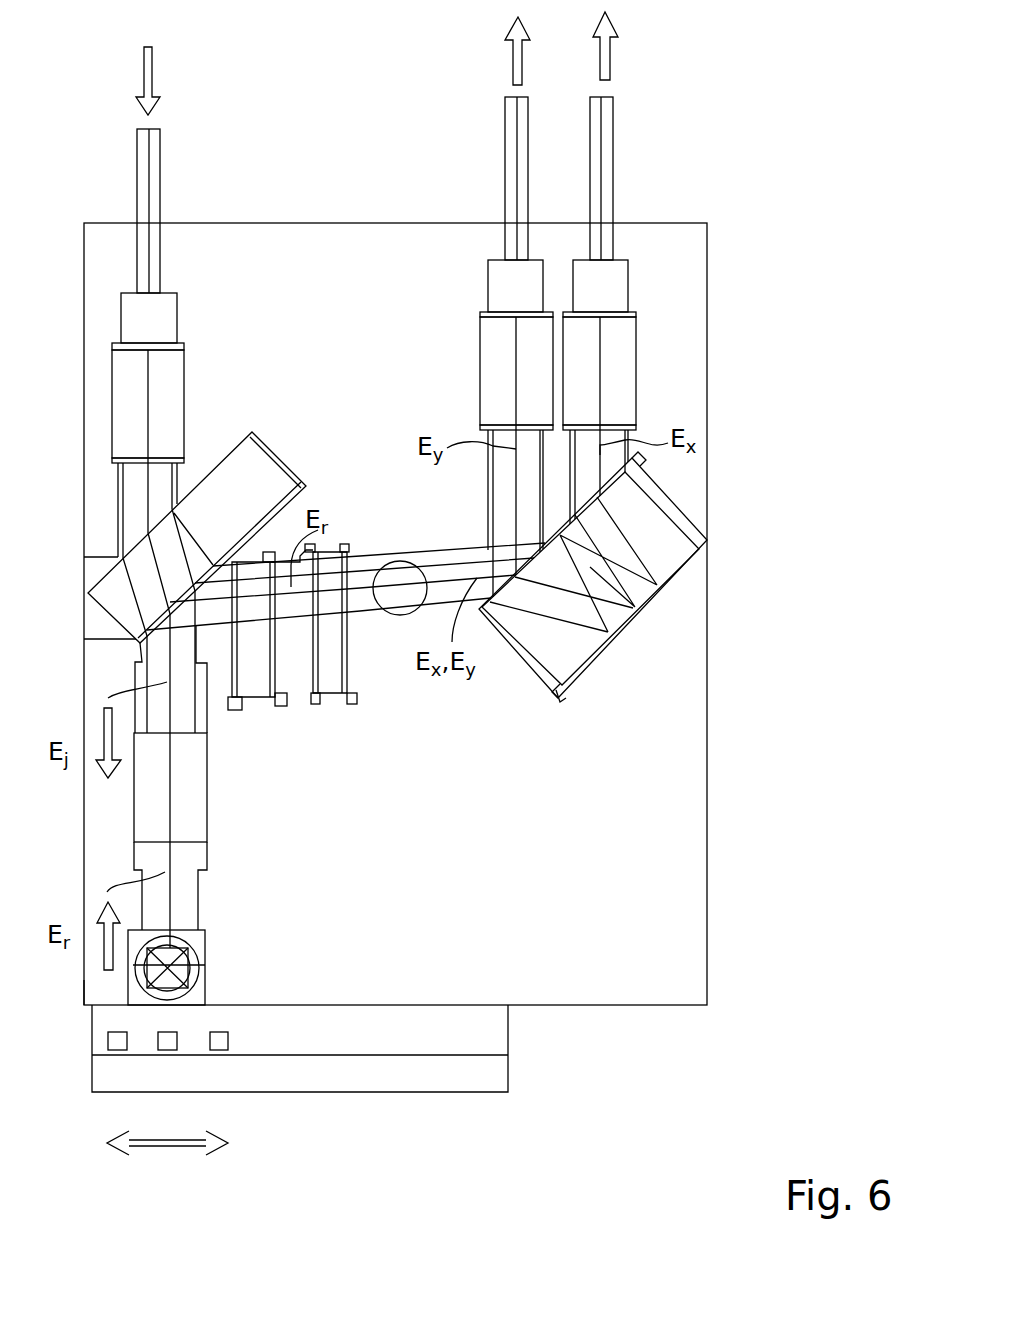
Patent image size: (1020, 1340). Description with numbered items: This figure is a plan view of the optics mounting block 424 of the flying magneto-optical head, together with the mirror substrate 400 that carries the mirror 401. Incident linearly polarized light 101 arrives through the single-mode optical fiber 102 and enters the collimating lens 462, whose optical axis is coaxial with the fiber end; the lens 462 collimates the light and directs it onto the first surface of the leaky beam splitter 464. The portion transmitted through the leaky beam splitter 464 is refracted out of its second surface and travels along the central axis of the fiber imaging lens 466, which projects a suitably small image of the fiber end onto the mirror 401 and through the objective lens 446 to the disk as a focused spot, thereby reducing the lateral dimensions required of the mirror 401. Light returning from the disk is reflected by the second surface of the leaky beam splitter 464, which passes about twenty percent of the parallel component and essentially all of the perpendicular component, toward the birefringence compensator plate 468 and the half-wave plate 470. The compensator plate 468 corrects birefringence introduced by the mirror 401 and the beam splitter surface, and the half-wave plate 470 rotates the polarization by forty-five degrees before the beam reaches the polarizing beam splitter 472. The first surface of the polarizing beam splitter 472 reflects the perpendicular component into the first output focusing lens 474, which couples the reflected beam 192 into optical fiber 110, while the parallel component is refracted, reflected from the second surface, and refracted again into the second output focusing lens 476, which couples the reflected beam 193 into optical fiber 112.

The incident light direction 101 is at (179, 81).
The single-mode optical fiber 102 is at (137, 182).
The optical fiber 110 is at (498, 222).
The optical fiber 112 is at (613, 172).
The reflected light beam 192 is at (541, 51).
The reflected light beam 193 is at (631, 46).
The mirror substrate 400 is at (495, 1027).
The mirror 401 is at (133, 980).
The optics mounting block 424 is at (708, 831).
The objective lens 446 is at (203, 963).
The collimating lens 462 is at (180, 408).
The leaky beam splitter 464 is at (280, 483).
The fiber imaging lens 466 is at (207, 800).
The birefringence compensator plate 468 is at (277, 672).
The half-wave plate 470 is at (345, 667).
The polarizing beam splitter 472 is at (653, 480).
The first output focusing lens 474 is at (480, 404).
The second output focusing lens 476 is at (633, 400).